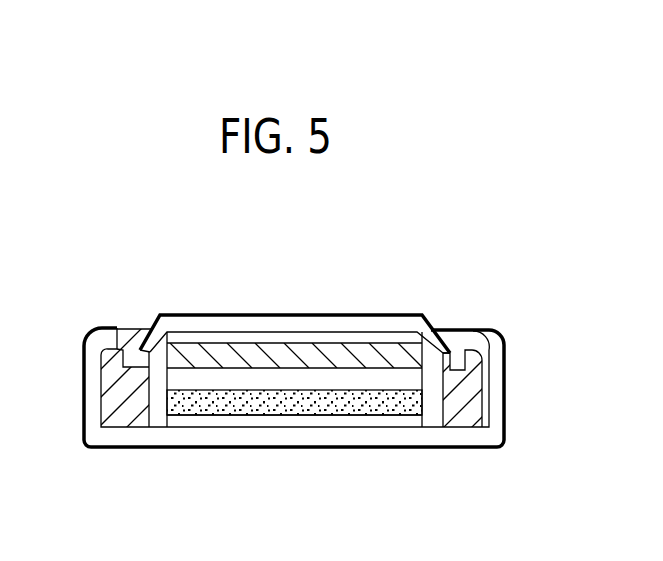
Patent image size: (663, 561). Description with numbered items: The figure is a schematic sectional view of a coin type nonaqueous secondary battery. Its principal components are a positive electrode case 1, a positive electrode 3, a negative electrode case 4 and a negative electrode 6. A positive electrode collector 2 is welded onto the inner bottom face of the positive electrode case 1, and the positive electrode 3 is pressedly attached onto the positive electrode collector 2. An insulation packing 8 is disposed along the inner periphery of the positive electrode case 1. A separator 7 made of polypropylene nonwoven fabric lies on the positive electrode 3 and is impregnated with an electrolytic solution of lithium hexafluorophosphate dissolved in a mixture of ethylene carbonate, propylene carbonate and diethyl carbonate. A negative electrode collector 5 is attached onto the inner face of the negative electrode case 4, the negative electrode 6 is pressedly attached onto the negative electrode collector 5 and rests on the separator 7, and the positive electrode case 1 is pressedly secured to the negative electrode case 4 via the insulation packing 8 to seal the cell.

The positive electrode case 1 is at (292, 438).
The positive electrode collector 2 is at (387, 424).
The positive electrode 3 is at (423, 402).
The negative electrode case 4 is at (286, 318).
The negative electrode collector 5 is at (408, 341).
The negative electrode 6 is at (473, 349).
The separator 7 is at (405, 381).
The insulation packing 8 is at (128, 334).